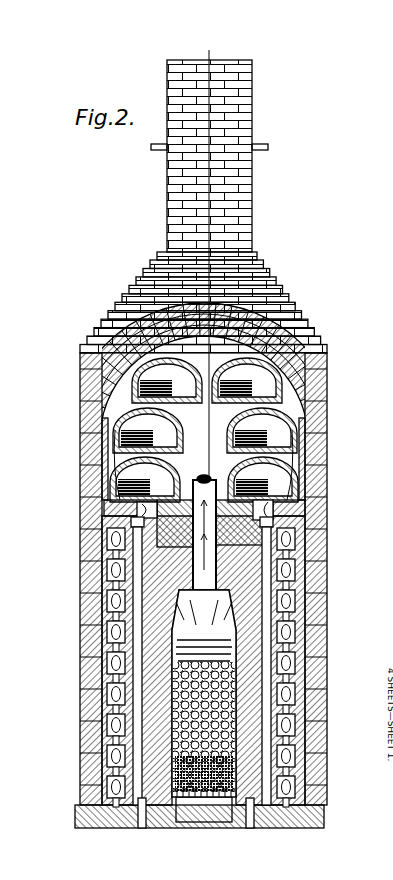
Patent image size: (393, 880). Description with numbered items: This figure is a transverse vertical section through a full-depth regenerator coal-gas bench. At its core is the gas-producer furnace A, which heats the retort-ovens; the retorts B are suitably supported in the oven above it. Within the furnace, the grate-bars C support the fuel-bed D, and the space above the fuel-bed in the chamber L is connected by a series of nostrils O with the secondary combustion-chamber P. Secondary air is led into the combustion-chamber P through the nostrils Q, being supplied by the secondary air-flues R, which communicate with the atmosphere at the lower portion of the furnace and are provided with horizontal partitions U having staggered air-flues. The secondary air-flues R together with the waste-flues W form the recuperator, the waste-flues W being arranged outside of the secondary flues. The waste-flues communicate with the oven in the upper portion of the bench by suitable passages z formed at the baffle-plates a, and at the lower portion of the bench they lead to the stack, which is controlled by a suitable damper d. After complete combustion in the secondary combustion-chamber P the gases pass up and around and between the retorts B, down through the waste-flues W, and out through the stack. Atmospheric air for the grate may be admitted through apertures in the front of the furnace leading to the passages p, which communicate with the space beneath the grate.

The gas-producer furnace A is at (207, 453).
The retorts B is at (338, 423).
The grate-bars C is at (204, 836).
The damper d is at (152, 148).
The passages z is at (148, 498).
The baffle-plates a is at (137, 510).
The secondary combustion-chamber P is at (110, 510).
The nostrils Q is at (368, 512).
The hatched block H is at (240, 530).
The secondary air-flues R is at (113, 646).
The horizontal partitions U is at (298, 673).
The waste-flues W is at (110, 570).
The nostrils O is at (345, 600).
The chamber L is at (188, 640).
The fuel-bed D is at (178, 703).
The passages p is at (142, 805).